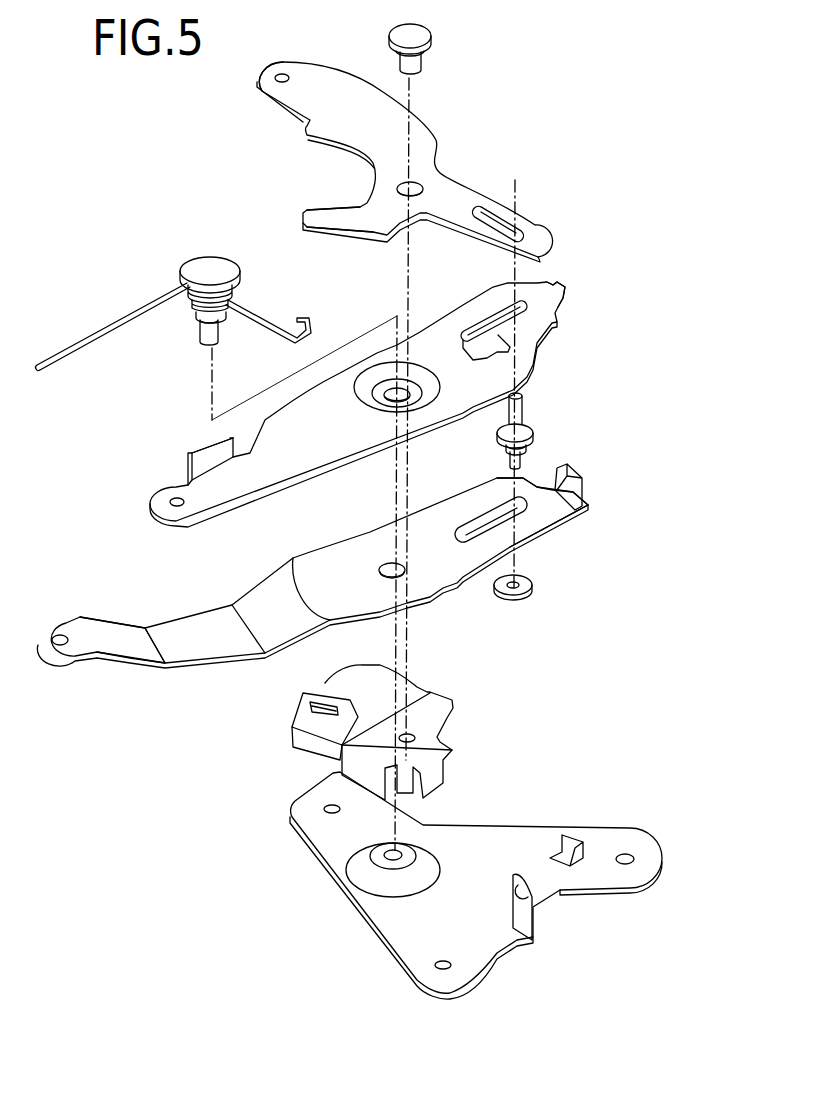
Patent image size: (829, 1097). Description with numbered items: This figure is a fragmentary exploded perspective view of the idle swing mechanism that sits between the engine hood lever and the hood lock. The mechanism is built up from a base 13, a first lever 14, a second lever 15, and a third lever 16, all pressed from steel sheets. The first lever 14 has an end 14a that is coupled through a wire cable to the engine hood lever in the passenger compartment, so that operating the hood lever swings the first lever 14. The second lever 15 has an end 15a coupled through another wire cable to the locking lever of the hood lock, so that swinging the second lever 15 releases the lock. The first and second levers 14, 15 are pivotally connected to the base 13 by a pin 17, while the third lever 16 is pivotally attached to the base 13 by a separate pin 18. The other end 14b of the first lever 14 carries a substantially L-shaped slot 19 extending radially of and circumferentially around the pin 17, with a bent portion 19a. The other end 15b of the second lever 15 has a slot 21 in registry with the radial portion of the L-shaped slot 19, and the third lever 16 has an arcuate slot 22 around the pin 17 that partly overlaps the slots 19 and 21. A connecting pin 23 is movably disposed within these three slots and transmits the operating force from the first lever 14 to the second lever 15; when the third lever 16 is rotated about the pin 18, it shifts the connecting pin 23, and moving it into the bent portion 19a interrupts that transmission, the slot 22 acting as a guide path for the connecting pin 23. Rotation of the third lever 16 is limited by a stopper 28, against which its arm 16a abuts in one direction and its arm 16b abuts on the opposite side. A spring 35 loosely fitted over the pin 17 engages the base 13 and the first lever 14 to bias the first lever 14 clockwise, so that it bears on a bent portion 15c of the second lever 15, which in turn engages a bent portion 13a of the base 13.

The base 13 is at (475, 877).
The bent portion of the base 13a is at (570, 830).
The first lever 14 is at (374, 398).
The end of the first lever 14a is at (177, 487).
The other end of the first lever 14b is at (560, 321).
The second lever 15 is at (340, 555).
The end of the second lever 15a is at (80, 633).
The other end of the second lever 15b is at (543, 525).
The bent portion of the second lever 15c is at (582, 473).
The third lever 16 is at (384, 162).
The arm of the third lever 16a is at (310, 213).
The arm of the third lever 16b is at (307, 128).
The pin 17 is at (187, 273).
The pin 18 is at (428, 42).
The L-shaped slot 19 is at (510, 313).
The bent portion of the slot 19a is at (480, 348).
The slot 21 is at (497, 520).
The slot 22 is at (488, 213).
The connecting pin 23 is at (530, 412).
The stopper 28 is at (292, 727).
The spring 35 is at (110, 323).